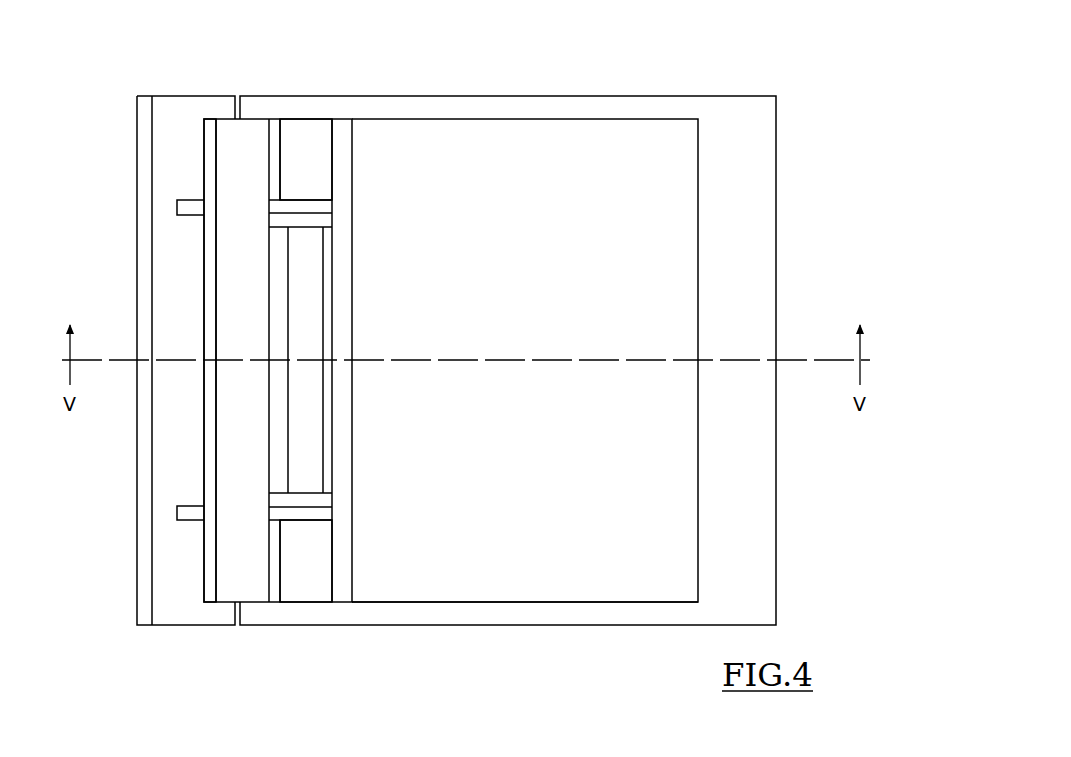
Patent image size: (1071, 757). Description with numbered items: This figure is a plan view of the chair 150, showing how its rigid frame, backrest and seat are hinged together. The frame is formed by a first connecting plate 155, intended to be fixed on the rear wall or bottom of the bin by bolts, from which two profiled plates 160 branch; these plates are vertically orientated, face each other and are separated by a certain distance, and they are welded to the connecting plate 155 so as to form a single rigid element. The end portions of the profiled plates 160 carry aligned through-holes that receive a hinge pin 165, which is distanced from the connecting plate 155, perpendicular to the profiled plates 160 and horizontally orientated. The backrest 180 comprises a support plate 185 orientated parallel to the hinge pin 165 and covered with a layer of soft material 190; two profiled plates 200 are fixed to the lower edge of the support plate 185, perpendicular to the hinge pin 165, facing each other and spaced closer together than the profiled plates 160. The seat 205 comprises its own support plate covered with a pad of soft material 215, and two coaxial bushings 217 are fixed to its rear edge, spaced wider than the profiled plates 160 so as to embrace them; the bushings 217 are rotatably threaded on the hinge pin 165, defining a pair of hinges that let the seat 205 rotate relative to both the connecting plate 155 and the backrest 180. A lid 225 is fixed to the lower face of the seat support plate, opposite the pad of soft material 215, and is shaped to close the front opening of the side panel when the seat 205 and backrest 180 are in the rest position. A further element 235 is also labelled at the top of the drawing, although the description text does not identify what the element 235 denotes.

The chair 150 is at (716, 92).
The first connecting plate 155 is at (175, 273).
The profiled plates 160 is at (303, 208).
The hinge pin 165 is at (303, 285).
The backrest 180 is at (186, 474).
The support plate 185 is at (205, 435).
The layer of soft material 190 is at (243, 170).
The profiled plates 200 is at (332, 218).
The seat 205 is at (583, 607).
The pad of soft material 215 is at (498, 543).
The bushings 217 is at (307, 170).
The lid 225 is at (742, 508).
The top wall 235 is at (428, 4).